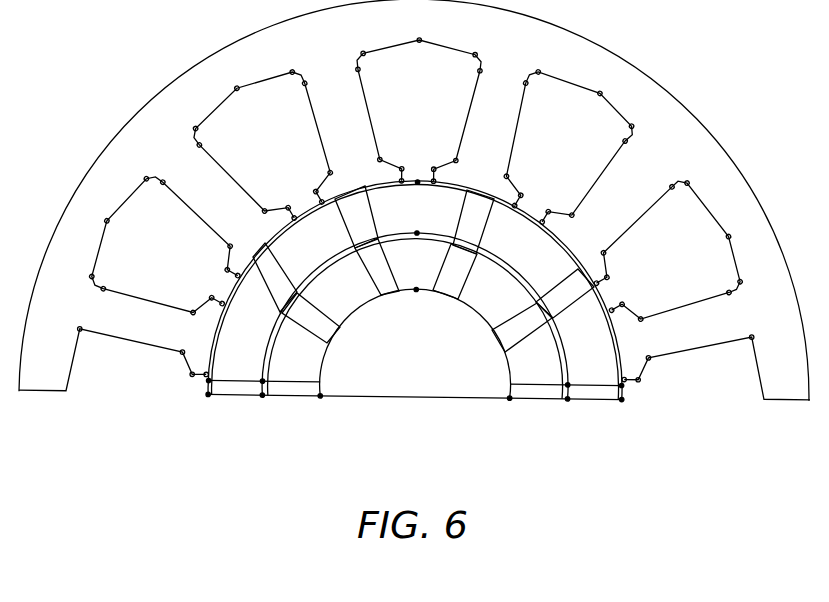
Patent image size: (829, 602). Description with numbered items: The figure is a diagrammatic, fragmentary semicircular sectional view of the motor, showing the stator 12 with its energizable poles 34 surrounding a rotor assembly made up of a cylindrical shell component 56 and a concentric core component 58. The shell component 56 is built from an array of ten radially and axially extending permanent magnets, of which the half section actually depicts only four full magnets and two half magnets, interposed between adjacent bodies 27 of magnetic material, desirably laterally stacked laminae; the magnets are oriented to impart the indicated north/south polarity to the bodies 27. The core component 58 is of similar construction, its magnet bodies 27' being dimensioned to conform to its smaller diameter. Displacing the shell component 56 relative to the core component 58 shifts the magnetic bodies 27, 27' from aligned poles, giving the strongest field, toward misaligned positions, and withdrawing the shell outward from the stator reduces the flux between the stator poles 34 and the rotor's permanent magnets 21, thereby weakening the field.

The stator 12 is at (665, 78).
The permanent magnets 21 is at (262, 286).
The bodies of magnetic material 27 is at (419, 298).
The magnet bodies 27' is at (414, 345).
The energizable poles 34 is at (473, 133).
The shell component 56 is at (530, 202).
The core component 58 is at (334, 366).